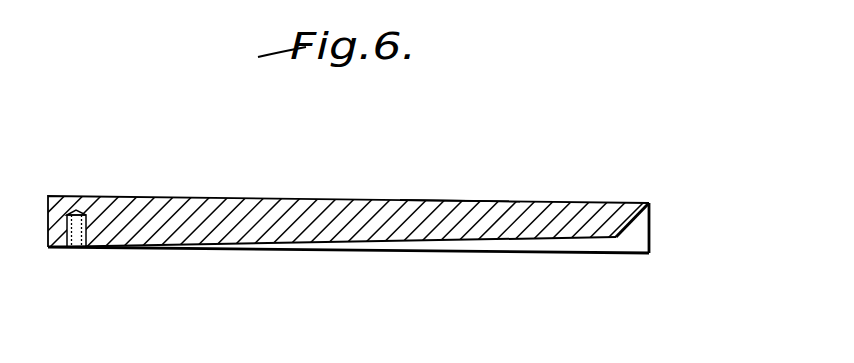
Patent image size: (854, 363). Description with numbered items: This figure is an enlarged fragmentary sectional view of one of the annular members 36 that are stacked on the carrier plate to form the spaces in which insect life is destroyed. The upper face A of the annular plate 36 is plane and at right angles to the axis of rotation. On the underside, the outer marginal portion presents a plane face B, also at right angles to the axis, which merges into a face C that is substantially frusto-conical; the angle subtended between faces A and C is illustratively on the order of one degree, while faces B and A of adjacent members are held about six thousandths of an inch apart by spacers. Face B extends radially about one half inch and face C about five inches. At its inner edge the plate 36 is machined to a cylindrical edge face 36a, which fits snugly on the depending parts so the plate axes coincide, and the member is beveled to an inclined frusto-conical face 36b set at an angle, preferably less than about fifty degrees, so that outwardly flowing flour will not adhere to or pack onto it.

The annular member 36 is at (228, 207).
The cylindrical edge face 36a is at (650, 203).
The inclined frusto-conical face 36b is at (626, 228).
The upper face A is at (460, 200).
The marginal under face B is at (101, 275).
The frusto-conical under face C is at (643, 282).